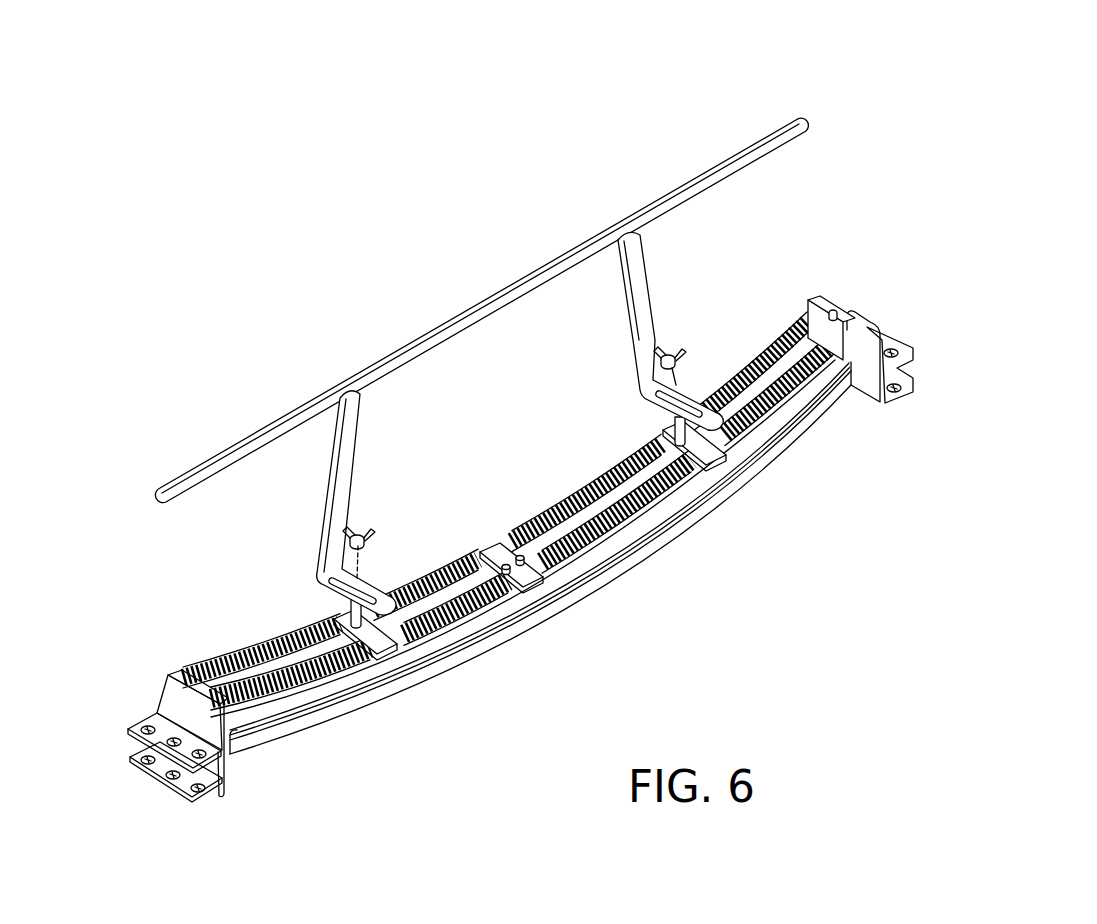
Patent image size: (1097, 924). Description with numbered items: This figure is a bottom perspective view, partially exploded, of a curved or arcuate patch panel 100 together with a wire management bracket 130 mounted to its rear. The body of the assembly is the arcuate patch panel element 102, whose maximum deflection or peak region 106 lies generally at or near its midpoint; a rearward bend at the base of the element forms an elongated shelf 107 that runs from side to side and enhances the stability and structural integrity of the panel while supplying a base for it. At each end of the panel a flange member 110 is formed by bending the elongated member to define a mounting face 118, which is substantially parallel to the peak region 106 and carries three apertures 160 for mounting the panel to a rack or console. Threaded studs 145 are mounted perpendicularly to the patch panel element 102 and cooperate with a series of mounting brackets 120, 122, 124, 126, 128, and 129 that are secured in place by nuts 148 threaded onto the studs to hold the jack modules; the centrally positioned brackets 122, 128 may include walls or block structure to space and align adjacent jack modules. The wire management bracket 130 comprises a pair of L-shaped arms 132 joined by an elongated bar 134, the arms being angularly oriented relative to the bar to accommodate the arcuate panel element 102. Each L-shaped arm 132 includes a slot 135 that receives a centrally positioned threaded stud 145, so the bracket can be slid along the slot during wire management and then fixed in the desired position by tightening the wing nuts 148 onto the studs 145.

The patch panel 100 is at (879, 305).
The patch panel element 102 is at (813, 430).
The peak region 106 is at (554, 628).
The elongated shelf 107 is at (330, 690).
The flange member 110 is at (143, 721).
The mounting face 118 is at (223, 778).
The mounting bracket 120 is at (166, 688).
The mounting bracket 122 is at (397, 652).
The mounting bracket 124 is at (495, 553).
The mounting bracket 126 is at (510, 535).
The mounting bracket 128 is at (697, 449).
The mounting bracket 129 is at (815, 298).
The wire management bracket 130 is at (749, 141).
The L-shaped arm 132 is at (654, 256).
The elongated bar 134 is at (502, 294).
The slot 135 is at (690, 402).
The threaded stud 145 is at (345, 619).
The wing nut 148 is at (652, 364).
The aperture 160 is at (190, 770).